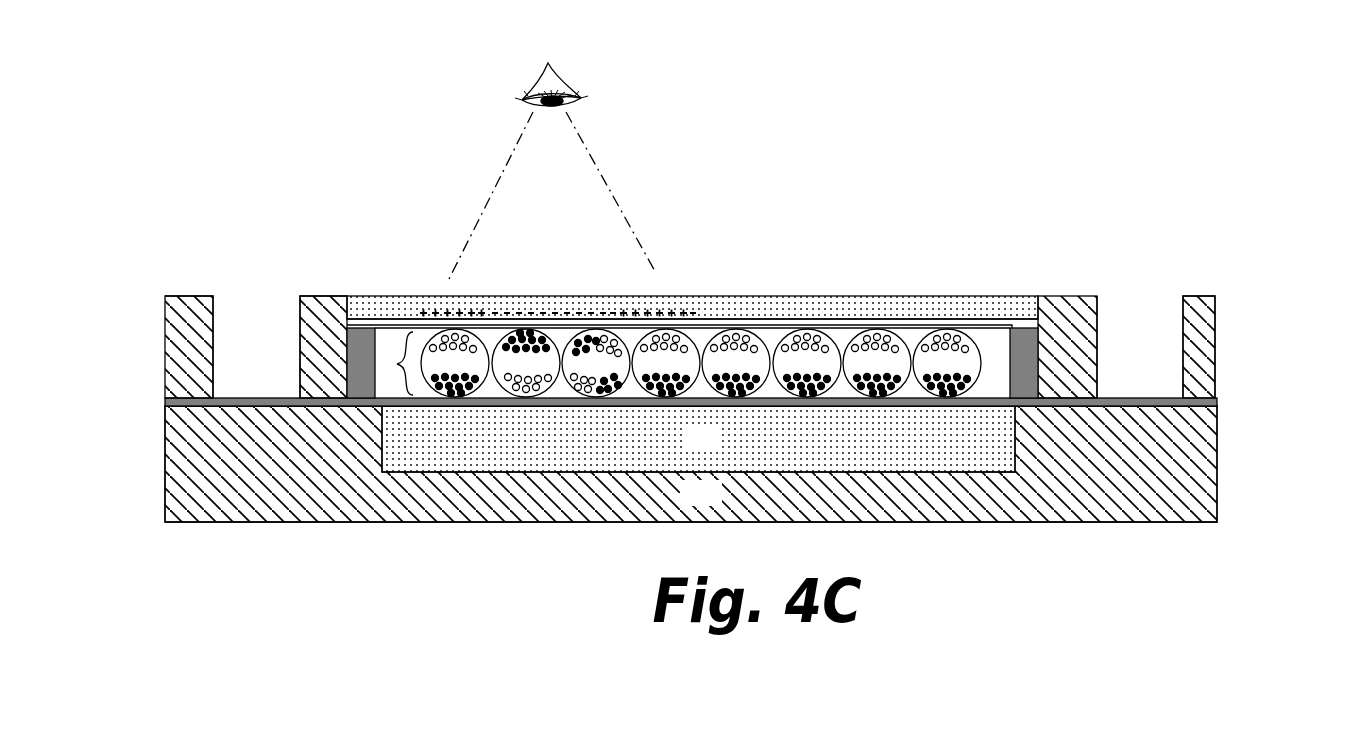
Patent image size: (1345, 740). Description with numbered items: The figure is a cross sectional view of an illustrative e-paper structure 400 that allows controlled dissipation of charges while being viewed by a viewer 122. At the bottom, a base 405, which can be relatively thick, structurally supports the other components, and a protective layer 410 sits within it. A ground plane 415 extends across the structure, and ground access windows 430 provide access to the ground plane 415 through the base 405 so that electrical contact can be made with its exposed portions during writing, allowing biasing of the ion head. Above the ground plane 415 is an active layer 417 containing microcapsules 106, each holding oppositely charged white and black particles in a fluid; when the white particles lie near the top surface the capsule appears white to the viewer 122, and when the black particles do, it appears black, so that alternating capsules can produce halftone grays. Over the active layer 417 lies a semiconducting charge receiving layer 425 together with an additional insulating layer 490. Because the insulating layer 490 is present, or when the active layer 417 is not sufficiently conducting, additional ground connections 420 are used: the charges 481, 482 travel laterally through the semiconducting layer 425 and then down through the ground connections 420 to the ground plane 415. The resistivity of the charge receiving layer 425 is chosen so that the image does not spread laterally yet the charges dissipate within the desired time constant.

The display device 400 is at (280, 113).
The viewer 122 is at (560, 84).
The active layer 417 is at (396, 364).
The charges at new locations 482 is at (568, 312).
The charges at new locations 481 is at (680, 312).
The charge receiving layer 425 is at (762, 306).
The microcapsules 106 is at (906, 337).
The insulating layer 490 is at (975, 325).
The ground connection 420 is at (1025, 330).
The ground access windows 430 is at (1149, 322).
The ground plane 415 is at (1215, 416).
The protective layer 410 is at (685, 450).
The base 405 is at (684, 505).